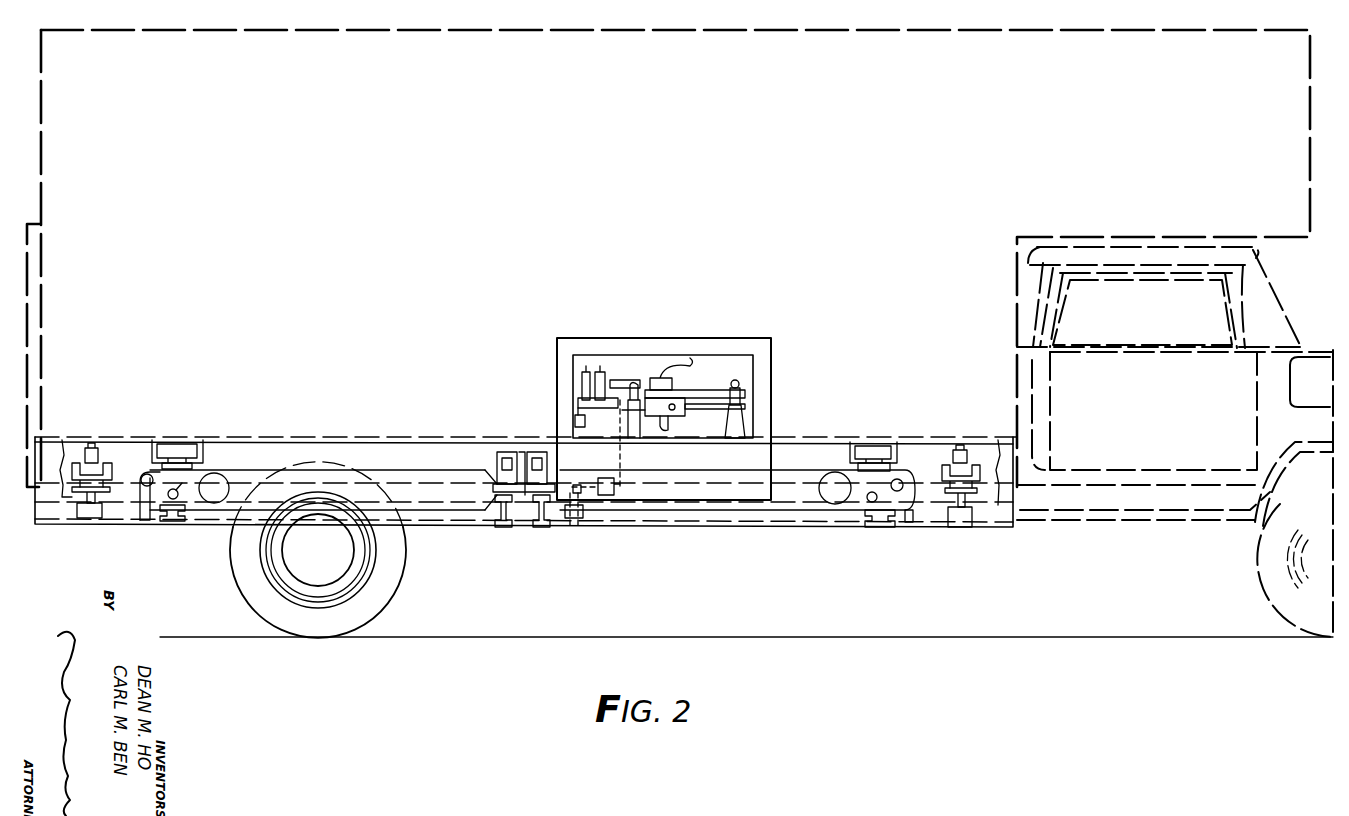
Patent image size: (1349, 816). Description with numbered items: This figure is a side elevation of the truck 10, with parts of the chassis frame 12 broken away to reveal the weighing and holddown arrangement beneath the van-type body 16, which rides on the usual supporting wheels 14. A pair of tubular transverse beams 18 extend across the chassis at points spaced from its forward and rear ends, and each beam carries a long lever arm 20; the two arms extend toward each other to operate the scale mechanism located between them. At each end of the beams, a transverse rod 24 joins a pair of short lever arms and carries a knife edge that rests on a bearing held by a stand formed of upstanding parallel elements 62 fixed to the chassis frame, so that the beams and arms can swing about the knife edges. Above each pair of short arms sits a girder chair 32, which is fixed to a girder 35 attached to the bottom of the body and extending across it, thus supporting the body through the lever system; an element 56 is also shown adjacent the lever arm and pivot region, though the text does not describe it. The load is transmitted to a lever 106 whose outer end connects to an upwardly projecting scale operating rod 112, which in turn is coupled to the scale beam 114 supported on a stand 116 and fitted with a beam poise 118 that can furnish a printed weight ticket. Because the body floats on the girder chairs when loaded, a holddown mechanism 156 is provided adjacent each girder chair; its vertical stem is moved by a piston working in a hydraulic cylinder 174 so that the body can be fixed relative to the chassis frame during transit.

The truck 10 is at (785, 530).
The chassis frame 12 is at (450, 528).
The supporting wheels 14 is at (385, 602).
The body 16 is at (1283, 240).
The transverse beams 18 is at (226, 480).
The lever arm 20 is at (420, 478).
The transverse rod 24 is at (145, 476).
The girder chair 32 is at (152, 445).
The girder 35 is at (203, 445).
The pin 56 is at (185, 479).
The upstanding parallel elements 62 is at (140, 520).
The lever 106 is at (600, 462).
The scale operating rod 112 is at (614, 431).
The scale beam 114 is at (631, 396).
The stand 116 is at (646, 438).
The beam poise 118 is at (668, 378).
The holddown mechanism 156 is at (80, 453).
The hydraulic cylinder 174 is at (90, 518).